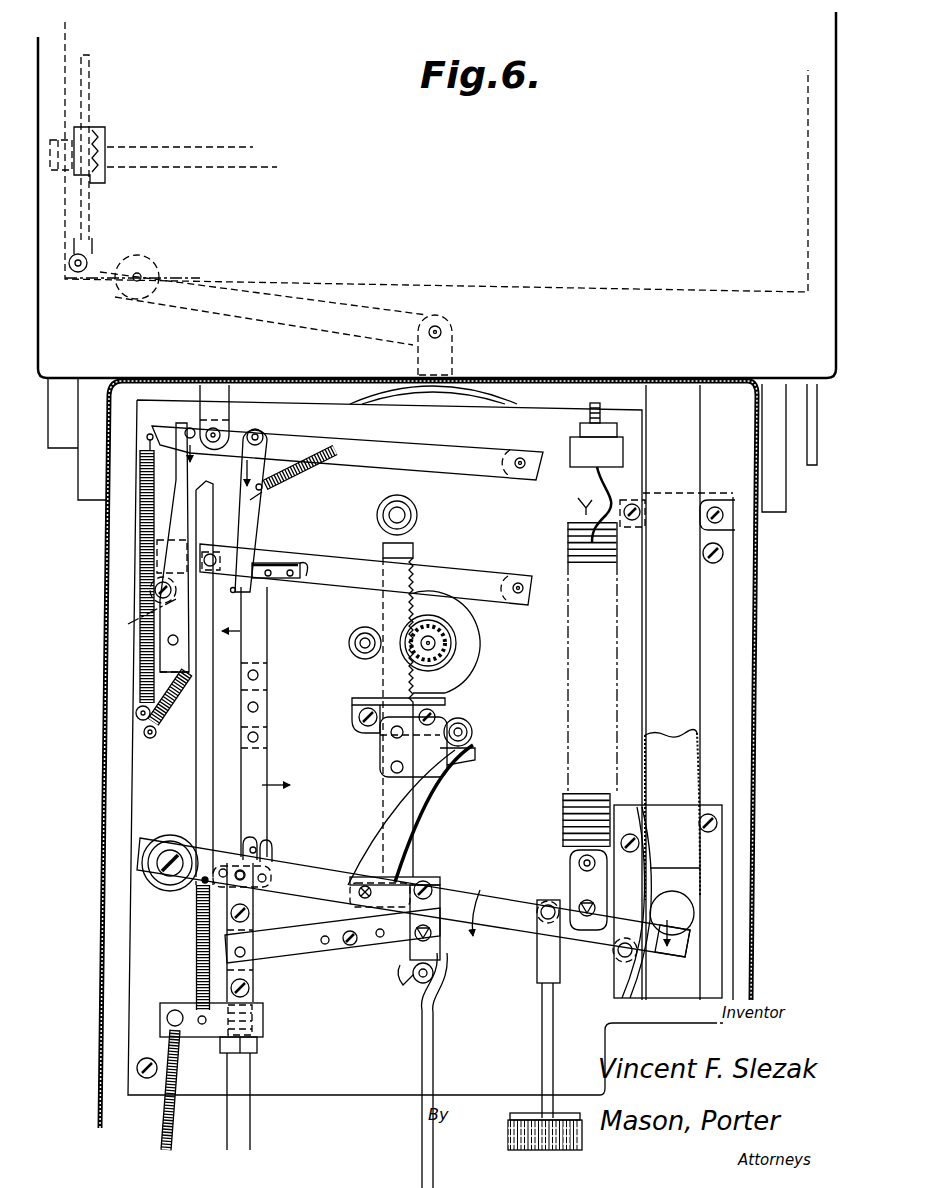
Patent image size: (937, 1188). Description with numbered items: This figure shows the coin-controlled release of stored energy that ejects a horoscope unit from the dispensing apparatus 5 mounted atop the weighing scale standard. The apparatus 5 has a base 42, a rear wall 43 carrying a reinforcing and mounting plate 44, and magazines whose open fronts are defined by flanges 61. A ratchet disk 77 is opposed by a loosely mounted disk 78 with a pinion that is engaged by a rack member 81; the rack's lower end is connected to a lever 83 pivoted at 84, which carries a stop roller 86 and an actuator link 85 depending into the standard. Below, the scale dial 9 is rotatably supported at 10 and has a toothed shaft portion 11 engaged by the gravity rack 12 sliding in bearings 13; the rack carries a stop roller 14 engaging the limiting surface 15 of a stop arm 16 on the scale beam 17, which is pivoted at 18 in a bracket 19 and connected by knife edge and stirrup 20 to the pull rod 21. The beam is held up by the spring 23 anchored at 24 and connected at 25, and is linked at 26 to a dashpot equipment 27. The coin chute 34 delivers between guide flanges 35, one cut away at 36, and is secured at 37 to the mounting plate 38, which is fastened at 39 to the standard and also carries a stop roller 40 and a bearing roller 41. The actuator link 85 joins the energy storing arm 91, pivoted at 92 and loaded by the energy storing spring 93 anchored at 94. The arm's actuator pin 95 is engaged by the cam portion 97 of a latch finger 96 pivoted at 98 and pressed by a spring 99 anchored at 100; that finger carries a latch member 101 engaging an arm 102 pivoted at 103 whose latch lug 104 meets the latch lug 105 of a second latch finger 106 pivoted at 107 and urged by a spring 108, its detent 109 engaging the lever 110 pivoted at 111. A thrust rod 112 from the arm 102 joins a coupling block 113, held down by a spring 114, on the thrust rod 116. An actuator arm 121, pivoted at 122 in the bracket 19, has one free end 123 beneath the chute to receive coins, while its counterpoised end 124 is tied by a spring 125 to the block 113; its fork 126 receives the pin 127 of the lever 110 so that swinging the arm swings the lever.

The horoscope dispensing apparatus 5 is at (776, 392).
The scale dial 9 is at (496, 382).
The rotatable support 10 is at (462, 668).
The toothed shaft portion 11 is at (440, 645).
The gravity rack 12 is at (415, 553).
The bearings 13 is at (360, 715).
The stop roller 14 is at (472, 727).
The limiting surface 15 is at (432, 762).
The stop arm 16 is at (418, 800).
The scale beam 17 is at (493, 933).
The pivot 18 is at (255, 965).
The bracket 19 is at (255, 983).
The knife edge and stirrup connection 20 is at (437, 970).
The pull rod 21 is at (430, 1075).
The spring 23 is at (613, 557).
The spring anchor 24 is at (608, 418).
The knife edge and stirrup connection 25 is at (578, 866).
The dashpot connection 26 is at (542, 1022).
The dashpot equipment 27 is at (582, 1152).
The coin chute 34 is at (667, 397).
The lateral guide flanges 35 is at (652, 868).
The cut-away portion 36 is at (682, 903).
The chute securing means 37 is at (722, 522).
The mounting plate 38 is at (548, 410).
The plate securing means 39 is at (723, 560).
The stop roller 40 is at (418, 515).
The bearing roller 41 is at (368, 628).
The base 42 is at (468, 375).
The rear wall 43 is at (437, 195).
The reinforcing and mounting plate 44 is at (602, 293).
The inwardly directed flanges 61 is at (186, 156).
The ratchet disk 77 is at (108, 133).
The ratchet disk 78 is at (95, 130).
The rack member 81 is at (90, 232).
The lever 83 is at (268, 298).
The lever pivot 84 is at (447, 327).
The actuator link 85 is at (230, 390).
The stop roller 86 is at (146, 266).
The energy storing arm 91 is at (377, 445).
The arm pivot 92 is at (522, 458).
The energy storing spring 93 is at (142, 563).
The spring anchor 94 is at (135, 712).
The actuator pin 95 is at (148, 438).
The latch finger 96 is at (160, 522).
The cam portion 97 is at (185, 473).
The finger pivot 98 is at (168, 640).
The spring 99 is at (168, 726).
The spring anchor 100 is at (143, 733).
The latch member 101 is at (128, 624).
The arm 102 is at (336, 572).
The arm pivot 103 is at (520, 585).
The latch lug 104 is at (303, 580).
The latch lug 105 is at (222, 530).
The latch finger 106 is at (252, 503).
The finger pivot 107 is at (262, 433).
The spring 108 is at (298, 472).
The detent 109 is at (236, 594).
The lever 110 is at (268, 660).
The lever pivot 111 is at (260, 708).
The thrust rod 112 is at (197, 790).
The coupling block 113 is at (264, 1028).
The spring 114 is at (166, 1104).
The thrust rod 116 is at (244, 1078).
The actuator arm 121 is at (272, 882).
The arm pivot 122 is at (255, 905).
The free end 123 is at (678, 952).
The counterpoise 124 is at (172, 880).
The spring 125 is at (196, 963).
The fork 126 is at (272, 852).
The pin 127 is at (262, 835).